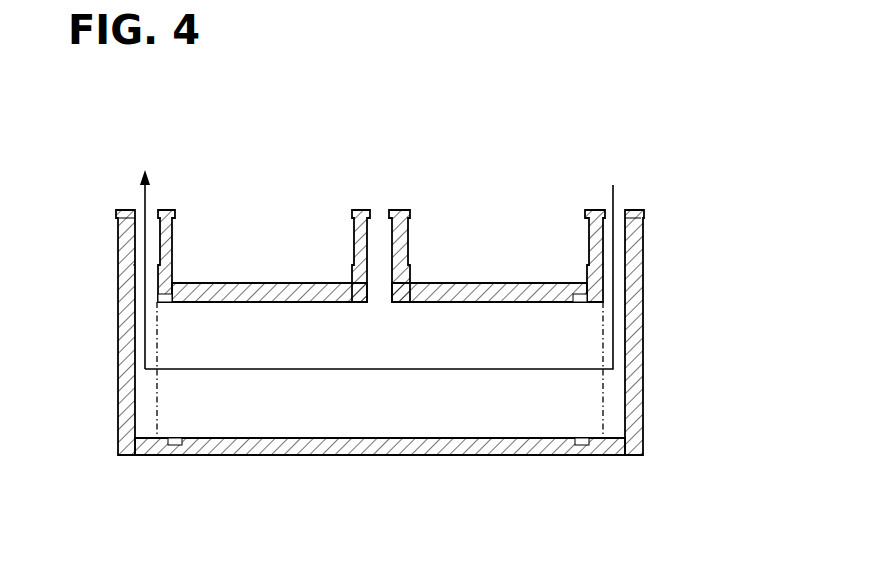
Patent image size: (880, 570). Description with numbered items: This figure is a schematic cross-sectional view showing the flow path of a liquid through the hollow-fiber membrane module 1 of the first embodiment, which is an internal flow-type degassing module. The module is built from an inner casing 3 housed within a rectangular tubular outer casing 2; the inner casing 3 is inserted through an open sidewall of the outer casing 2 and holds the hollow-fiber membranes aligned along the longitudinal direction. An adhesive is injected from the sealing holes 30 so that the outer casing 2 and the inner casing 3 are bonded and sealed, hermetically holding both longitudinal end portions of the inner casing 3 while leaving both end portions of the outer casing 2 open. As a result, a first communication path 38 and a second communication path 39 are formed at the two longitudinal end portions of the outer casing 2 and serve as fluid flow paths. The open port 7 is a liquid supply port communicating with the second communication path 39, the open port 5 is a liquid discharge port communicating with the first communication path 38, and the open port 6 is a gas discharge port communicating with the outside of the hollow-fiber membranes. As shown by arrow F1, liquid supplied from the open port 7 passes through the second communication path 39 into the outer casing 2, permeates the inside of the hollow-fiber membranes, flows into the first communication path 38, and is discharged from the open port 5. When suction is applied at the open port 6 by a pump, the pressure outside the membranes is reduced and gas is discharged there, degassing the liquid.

The hollow-fiber membrane module 1 is at (384, 311).
The outer casing 2 is at (650, 281).
The inner casing 3 is at (148, 341).
The open port 5 is at (176, 222).
The open port 6 is at (346, 262).
The open port 7 is at (586, 280).
The sealing holes 30 is at (177, 290).
The first communication path 38 is at (148, 387).
The second communication path 39 is at (612, 388).
The arrow F1 is at (251, 372).